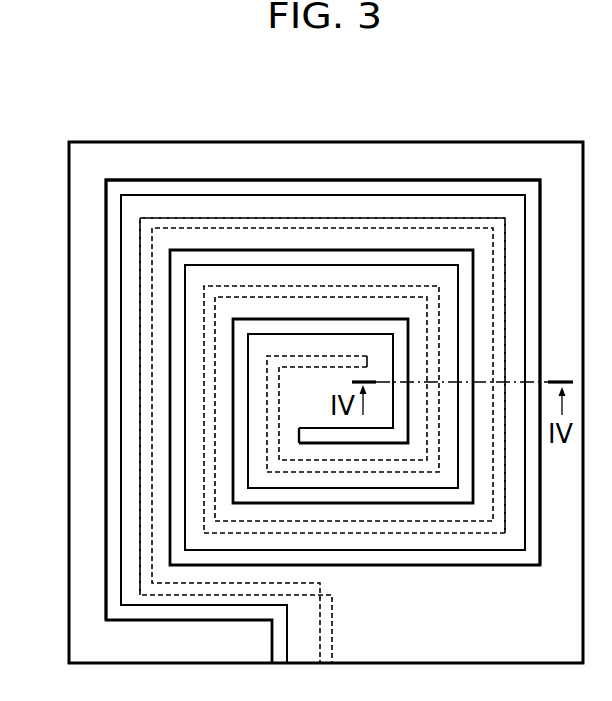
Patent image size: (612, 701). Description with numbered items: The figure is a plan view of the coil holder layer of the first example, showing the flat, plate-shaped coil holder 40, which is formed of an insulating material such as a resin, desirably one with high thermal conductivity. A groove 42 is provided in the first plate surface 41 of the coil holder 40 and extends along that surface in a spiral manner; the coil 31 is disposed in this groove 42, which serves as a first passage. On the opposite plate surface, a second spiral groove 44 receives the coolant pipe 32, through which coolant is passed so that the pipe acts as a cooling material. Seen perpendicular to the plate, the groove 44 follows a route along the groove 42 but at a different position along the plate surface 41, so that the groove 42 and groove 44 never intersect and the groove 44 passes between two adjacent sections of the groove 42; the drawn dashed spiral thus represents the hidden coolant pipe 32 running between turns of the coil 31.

The coil 31 is at (290, 185).
The coolant pipe 32 is at (147, 422).
The coil holder 40 is at (517, 139).
The first plate surface 41 is at (448, 162).
The groove 42 is at (373, 180).
The groove 44 is at (140, 353).